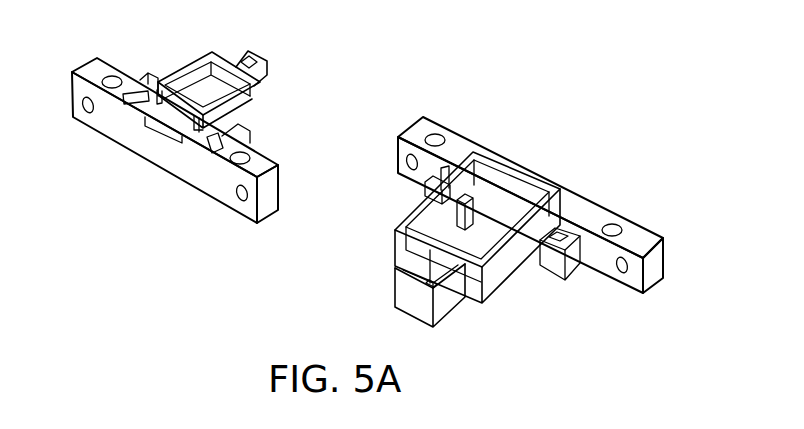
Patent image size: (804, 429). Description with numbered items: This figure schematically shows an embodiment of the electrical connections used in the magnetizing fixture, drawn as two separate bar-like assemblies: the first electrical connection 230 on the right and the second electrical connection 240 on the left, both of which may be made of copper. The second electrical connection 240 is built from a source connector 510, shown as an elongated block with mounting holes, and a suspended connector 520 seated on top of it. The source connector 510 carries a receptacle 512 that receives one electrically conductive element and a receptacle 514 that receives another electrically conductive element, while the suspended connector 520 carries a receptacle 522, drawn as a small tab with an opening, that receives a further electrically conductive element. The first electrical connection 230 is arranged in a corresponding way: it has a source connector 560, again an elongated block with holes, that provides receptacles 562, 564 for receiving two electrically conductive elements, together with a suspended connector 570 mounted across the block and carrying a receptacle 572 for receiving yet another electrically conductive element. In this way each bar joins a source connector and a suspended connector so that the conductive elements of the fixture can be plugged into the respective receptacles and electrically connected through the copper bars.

The first electrical connection 230 is at (484, 329).
The second electrical connection 240 is at (291, 124).
The source connector 510 is at (115, 128).
The receptacle 512 is at (136, 80).
The receptacle 514 is at (205, 147).
The suspended connector 520 is at (274, 62).
The receptacle 522 is at (247, 50).
The source connector 560 is at (503, 152).
The receptacle 562 is at (443, 163).
The receptacle 564 is at (563, 228).
The suspended connector 570 is at (397, 223).
The receptacle 572 is at (410, 288).